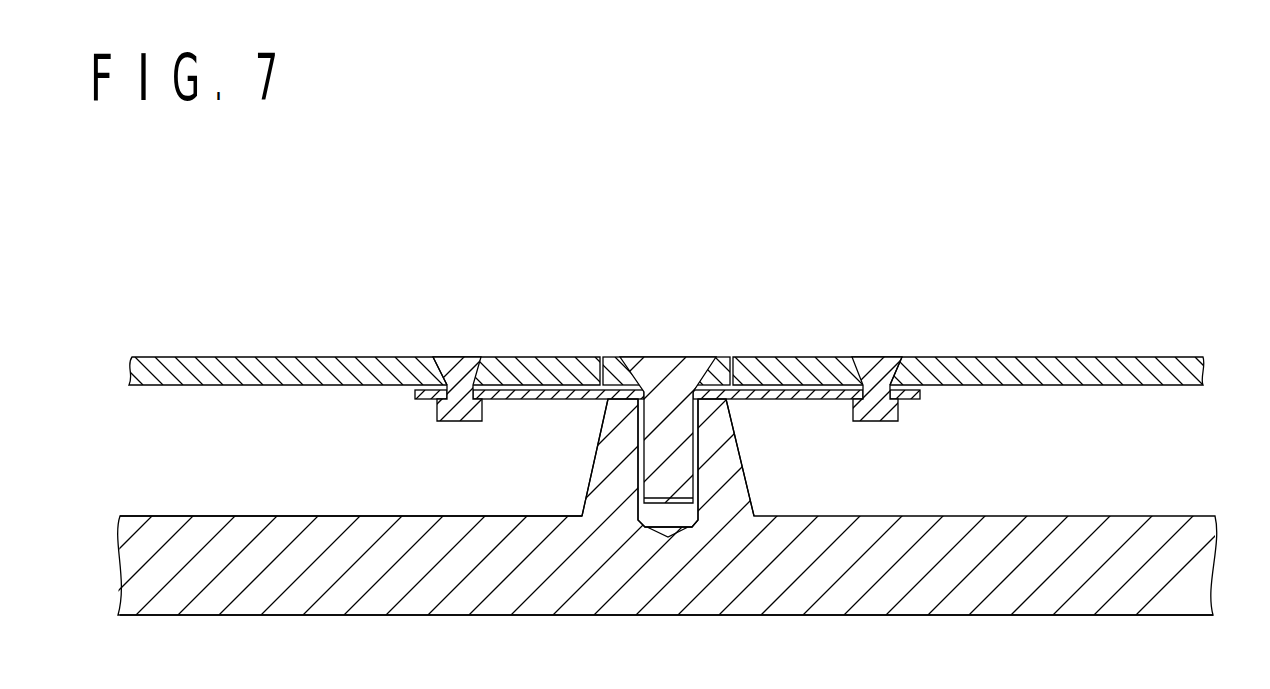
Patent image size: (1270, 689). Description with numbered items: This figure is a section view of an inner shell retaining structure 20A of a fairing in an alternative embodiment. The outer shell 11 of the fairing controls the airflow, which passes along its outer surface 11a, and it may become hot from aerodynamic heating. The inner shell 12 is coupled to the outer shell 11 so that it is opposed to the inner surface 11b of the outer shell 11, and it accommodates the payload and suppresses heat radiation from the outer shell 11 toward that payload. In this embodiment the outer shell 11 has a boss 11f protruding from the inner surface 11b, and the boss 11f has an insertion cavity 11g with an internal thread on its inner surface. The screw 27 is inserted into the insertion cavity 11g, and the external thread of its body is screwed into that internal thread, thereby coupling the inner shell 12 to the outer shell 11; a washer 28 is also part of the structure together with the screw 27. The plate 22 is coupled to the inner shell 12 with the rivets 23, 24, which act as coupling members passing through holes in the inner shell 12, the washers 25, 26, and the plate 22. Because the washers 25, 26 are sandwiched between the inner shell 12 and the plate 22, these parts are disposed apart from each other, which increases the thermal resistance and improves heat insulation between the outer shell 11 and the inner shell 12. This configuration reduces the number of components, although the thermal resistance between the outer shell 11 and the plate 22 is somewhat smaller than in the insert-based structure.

The outer shell 11 is at (1215, 525).
The outer surface 11a is at (298, 617).
The inner surface 11b is at (232, 514).
The boss 11f is at (745, 478).
The insertion cavity 11g is at (675, 522).
The inner shell 12 is at (1203, 372).
The inner shell retaining structure 20A is at (394, 478).
The plate 22 is at (920, 397).
The rivet 23 is at (462, 357).
The rivet 24 is at (880, 362).
The washer 25 is at (440, 386).
The washer 26 is at (897, 385).
The screw 27 is at (667, 357).
The washer 28 is at (730, 357).